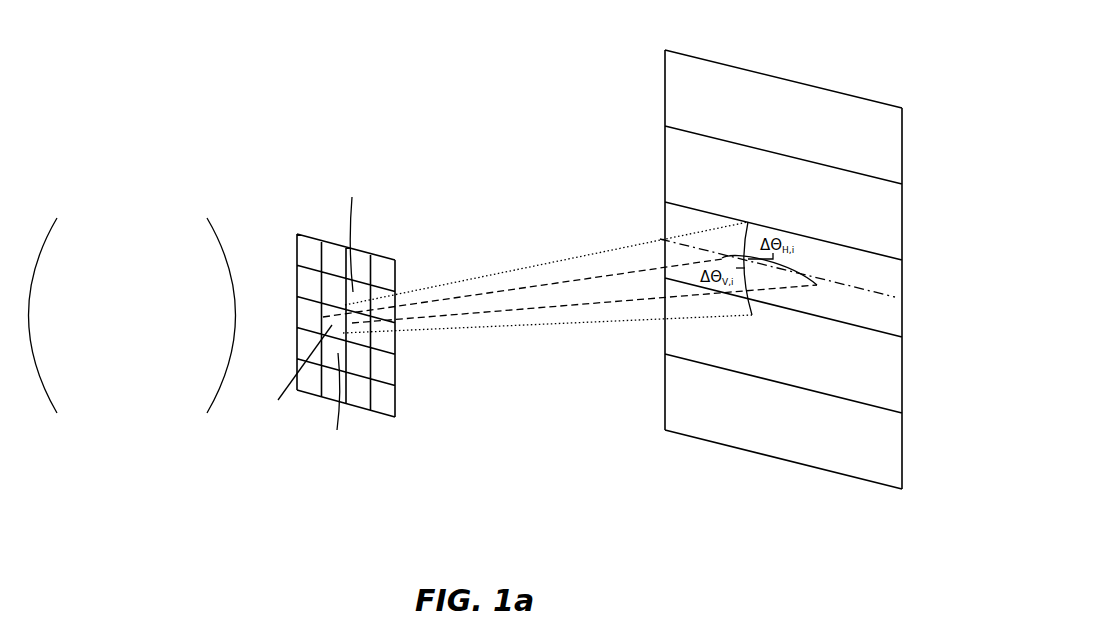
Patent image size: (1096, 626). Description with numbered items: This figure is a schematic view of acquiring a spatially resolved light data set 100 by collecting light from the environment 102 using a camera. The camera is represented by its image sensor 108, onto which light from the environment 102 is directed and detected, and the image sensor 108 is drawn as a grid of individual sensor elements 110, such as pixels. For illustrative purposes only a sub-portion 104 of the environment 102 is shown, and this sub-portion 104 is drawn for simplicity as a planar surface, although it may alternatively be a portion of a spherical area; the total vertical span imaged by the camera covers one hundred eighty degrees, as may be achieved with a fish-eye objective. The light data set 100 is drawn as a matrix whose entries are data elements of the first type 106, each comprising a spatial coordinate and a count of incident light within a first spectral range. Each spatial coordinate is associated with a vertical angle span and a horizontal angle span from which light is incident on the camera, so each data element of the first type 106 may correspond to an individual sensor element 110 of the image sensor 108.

The spatially resolved light data set 100 is at (153, 223).
The data element of the first type 106 is at (120, 407).
The sensor element 110 is at (383, 273).
The image sensor 108 is at (395, 390).
The environment 102 is at (652, 100).
The sub-portion of the environment 104 is at (665, 157).